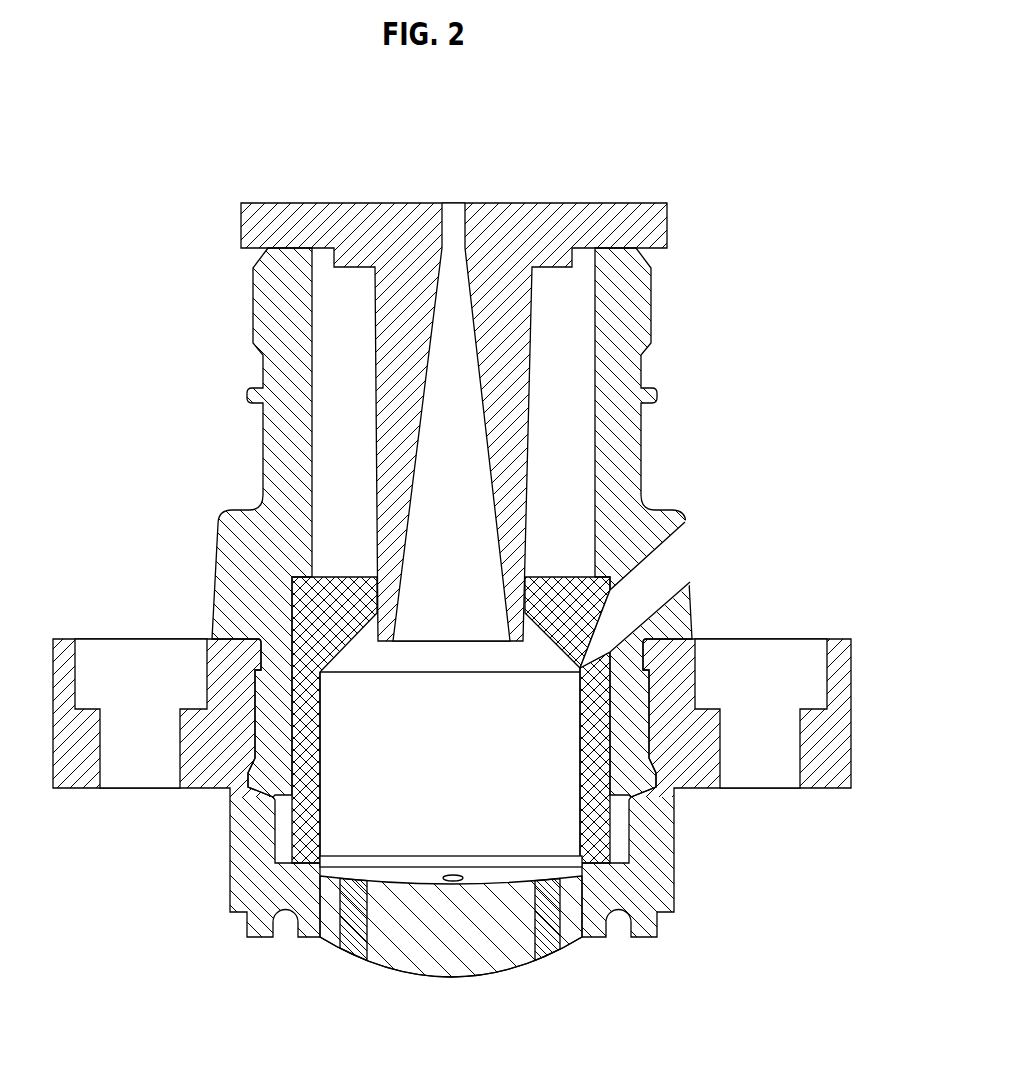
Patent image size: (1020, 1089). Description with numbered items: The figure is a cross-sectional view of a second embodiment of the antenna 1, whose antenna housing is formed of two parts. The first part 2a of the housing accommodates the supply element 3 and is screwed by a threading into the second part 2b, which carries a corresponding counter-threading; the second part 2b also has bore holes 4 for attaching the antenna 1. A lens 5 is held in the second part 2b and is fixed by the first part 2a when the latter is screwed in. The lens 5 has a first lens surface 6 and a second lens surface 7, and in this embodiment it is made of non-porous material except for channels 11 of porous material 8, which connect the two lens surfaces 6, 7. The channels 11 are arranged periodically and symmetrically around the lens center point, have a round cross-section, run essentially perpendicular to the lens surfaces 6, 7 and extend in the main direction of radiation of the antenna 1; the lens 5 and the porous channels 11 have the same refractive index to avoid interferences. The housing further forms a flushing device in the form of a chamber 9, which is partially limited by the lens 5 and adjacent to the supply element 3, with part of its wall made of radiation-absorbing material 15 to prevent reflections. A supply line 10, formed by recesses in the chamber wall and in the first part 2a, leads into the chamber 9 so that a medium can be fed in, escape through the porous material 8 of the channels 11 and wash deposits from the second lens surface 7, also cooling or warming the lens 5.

The antenna 1 is at (652, 177).
The first part of the housing 2a is at (632, 432).
The second part of the housing 2b is at (835, 660).
The supply element 3 is at (508, 228).
The bore holes 4 is at (146, 660).
The lens 5 is at (490, 958).
The first lens surface 6 is at (414, 879).
The second lens surface 7 is at (450, 977).
The porous material 8 is at (450, 882).
The chamber 9 is at (528, 820).
The supply line 10 is at (673, 555).
The channels 11 is at (353, 940).
The radiation-absorbing material 15 is at (305, 813).